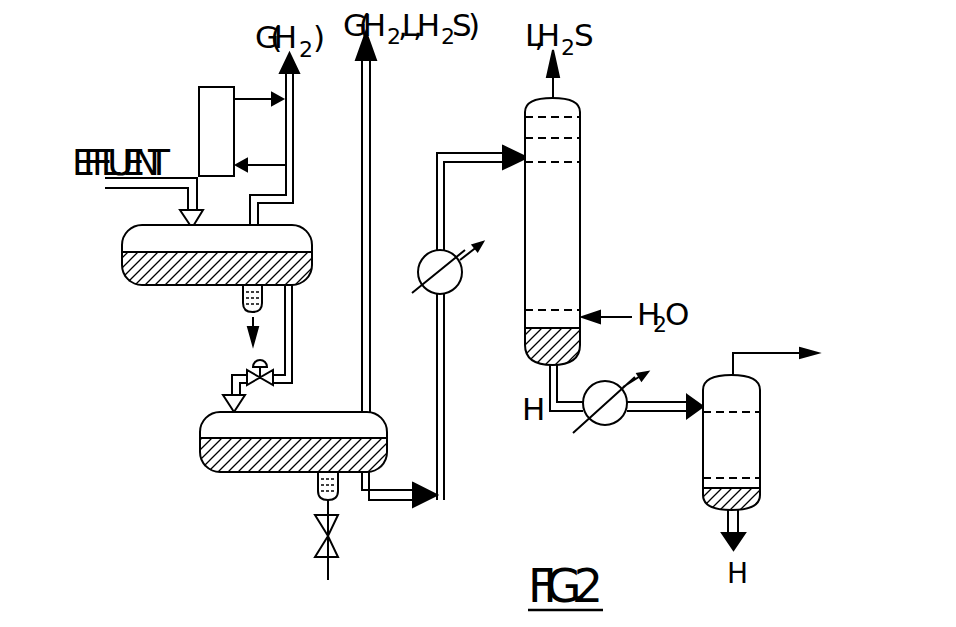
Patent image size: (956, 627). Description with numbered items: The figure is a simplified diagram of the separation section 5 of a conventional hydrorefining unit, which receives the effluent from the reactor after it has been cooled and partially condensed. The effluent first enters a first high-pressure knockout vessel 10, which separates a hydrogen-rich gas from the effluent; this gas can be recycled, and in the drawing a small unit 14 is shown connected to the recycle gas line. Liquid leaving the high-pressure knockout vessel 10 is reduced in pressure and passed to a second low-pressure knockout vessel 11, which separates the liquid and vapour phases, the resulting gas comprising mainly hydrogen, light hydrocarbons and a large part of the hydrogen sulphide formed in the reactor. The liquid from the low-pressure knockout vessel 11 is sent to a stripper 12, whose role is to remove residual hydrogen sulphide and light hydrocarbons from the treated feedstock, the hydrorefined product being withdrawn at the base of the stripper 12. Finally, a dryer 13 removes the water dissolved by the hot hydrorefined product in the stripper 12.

The separation section 5 is at (653, 127).
The first high-pressure knockout vessel 10 is at (137, 242).
The second low-pressure knockout vessel 11 is at (218, 428).
The stripper 12 is at (567, 243).
The dryer 13 is at (750, 450).
The heat exchanger 14 is at (213, 113).